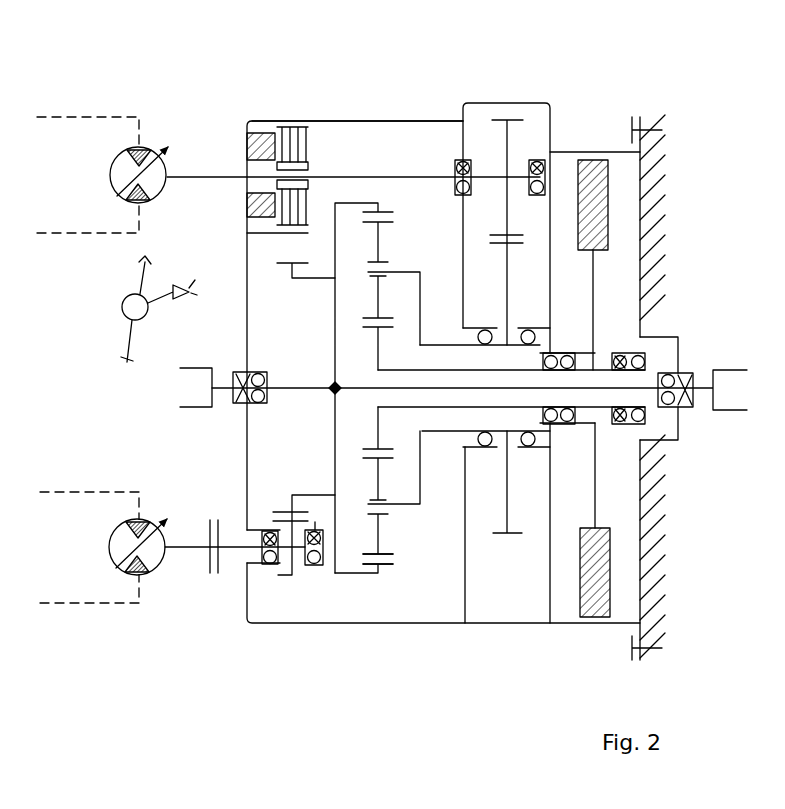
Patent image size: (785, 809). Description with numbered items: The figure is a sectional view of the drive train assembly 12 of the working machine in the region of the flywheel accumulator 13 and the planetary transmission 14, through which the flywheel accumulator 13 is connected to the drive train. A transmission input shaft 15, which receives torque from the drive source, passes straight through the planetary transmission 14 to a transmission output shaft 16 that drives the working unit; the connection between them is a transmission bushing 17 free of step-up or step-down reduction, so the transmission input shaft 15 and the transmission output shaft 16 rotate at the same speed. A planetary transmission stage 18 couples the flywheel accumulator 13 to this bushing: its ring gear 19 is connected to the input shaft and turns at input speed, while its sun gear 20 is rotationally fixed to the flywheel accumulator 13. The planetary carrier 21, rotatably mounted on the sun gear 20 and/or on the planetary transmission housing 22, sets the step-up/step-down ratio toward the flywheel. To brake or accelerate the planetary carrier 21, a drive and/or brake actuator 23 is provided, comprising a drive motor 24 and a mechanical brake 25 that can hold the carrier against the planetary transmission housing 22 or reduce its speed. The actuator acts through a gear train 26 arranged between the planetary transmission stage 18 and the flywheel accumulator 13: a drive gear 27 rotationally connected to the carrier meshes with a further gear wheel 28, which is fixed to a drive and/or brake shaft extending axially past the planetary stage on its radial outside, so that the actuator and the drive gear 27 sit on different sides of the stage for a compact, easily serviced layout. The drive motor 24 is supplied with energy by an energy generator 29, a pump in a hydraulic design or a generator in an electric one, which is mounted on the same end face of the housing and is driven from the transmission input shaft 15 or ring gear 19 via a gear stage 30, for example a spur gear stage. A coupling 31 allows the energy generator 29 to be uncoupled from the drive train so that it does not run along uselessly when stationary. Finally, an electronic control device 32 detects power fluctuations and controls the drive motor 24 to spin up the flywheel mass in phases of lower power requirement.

The drive train assembly 12 is at (586, 72).
The flywheel accumulator 13 is at (590, 617).
The planetary transmission 14 is at (392, 606).
The transmission input shaft 15 is at (223, 383).
The transmission output shaft 16 is at (705, 387).
The transmission bushing 17 is at (628, 386).
The planetary transmission stage 18 is at (350, 578).
The ring gear 19 is at (340, 576).
The sun gear 20 is at (380, 440).
The planetary carrier 21 is at (396, 506).
The planetary transmission housing 22 is at (400, 120).
The drive and/or brake actuator 23 is at (157, 117).
The drive motor 24 is at (158, 191).
The brake 25 is at (310, 132).
The gear train 26 is at (528, 158).
The drive gear 27 is at (509, 268).
The gear wheel 28 is at (508, 130).
The energy generator 29 is at (157, 571).
The gear stage 30 is at (268, 589).
The coupling 31 is at (207, 519).
The electronic control device 32 is at (125, 317).